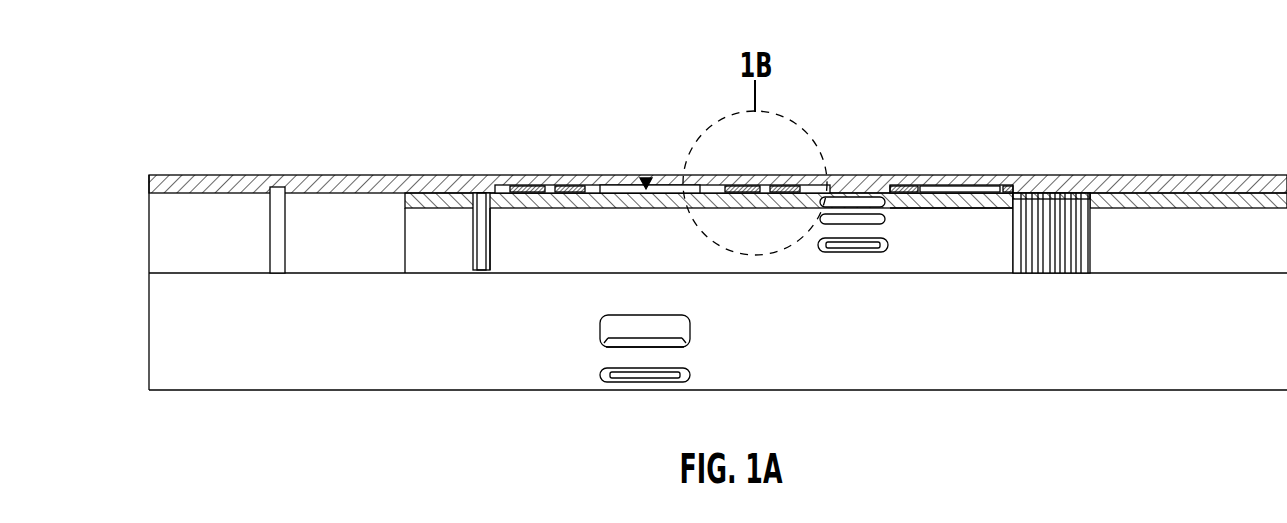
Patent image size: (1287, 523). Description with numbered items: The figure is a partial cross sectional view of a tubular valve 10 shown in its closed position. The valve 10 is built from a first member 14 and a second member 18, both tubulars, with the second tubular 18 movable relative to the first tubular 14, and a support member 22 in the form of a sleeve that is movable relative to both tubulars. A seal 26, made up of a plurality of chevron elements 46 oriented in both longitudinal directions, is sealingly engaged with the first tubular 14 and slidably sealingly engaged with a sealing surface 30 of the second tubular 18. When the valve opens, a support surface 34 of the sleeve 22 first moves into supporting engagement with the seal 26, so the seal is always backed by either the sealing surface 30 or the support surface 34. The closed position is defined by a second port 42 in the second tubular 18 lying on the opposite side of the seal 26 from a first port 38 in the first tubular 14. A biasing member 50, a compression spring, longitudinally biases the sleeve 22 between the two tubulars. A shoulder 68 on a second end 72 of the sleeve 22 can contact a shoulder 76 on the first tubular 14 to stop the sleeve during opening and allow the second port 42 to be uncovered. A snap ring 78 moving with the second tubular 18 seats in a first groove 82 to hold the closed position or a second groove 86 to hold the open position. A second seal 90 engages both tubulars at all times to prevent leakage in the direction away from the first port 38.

The valve 10 is at (264, 71).
The first member 14 is at (366, 175).
The second member 18 is at (430, 195).
The support member 22 is at (955, 186).
The seal 26 is at (778, 185).
The sealing surface 30 is at (647, 178).
The support surface 34 is at (895, 186).
The first port 38 is at (617, 183).
The second port 42 is at (888, 245).
The chevron elements 46 is at (742, 185).
The biasing member 50 is at (1050, 193).
The shoulder 68 is at (1010, 188).
The second end 72 is at (1011, 212).
The shoulder 76 is at (940, 208).
The snap ring 78 is at (472, 215).
The first groove 82 is at (477, 193).
The second groove 86 is at (276, 187).
The second seal 90 is at (545, 185).